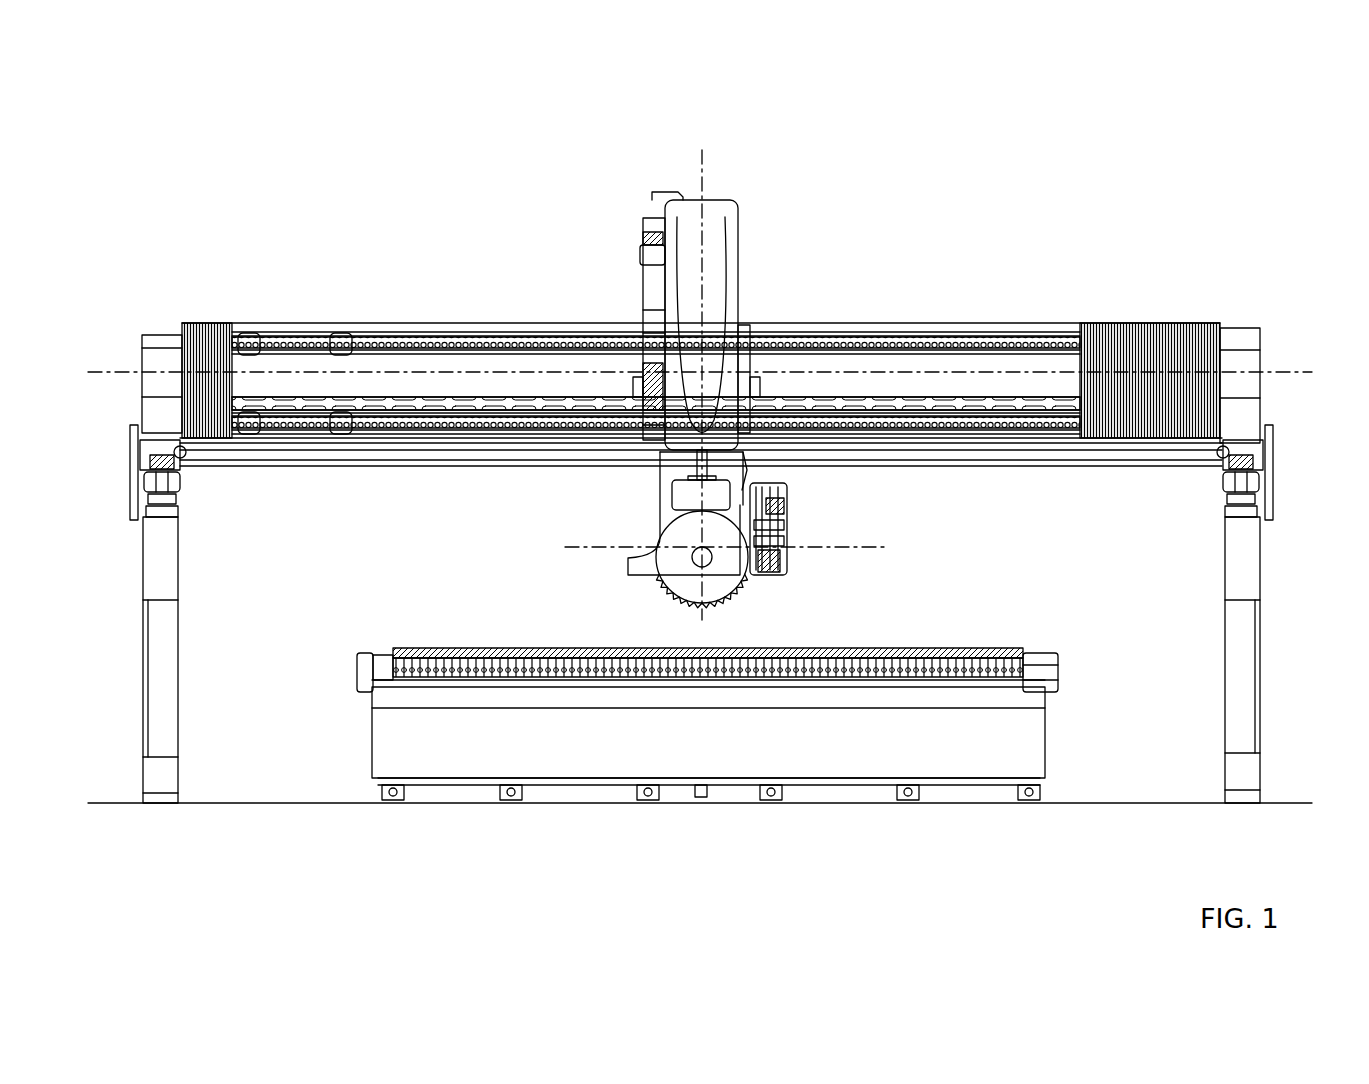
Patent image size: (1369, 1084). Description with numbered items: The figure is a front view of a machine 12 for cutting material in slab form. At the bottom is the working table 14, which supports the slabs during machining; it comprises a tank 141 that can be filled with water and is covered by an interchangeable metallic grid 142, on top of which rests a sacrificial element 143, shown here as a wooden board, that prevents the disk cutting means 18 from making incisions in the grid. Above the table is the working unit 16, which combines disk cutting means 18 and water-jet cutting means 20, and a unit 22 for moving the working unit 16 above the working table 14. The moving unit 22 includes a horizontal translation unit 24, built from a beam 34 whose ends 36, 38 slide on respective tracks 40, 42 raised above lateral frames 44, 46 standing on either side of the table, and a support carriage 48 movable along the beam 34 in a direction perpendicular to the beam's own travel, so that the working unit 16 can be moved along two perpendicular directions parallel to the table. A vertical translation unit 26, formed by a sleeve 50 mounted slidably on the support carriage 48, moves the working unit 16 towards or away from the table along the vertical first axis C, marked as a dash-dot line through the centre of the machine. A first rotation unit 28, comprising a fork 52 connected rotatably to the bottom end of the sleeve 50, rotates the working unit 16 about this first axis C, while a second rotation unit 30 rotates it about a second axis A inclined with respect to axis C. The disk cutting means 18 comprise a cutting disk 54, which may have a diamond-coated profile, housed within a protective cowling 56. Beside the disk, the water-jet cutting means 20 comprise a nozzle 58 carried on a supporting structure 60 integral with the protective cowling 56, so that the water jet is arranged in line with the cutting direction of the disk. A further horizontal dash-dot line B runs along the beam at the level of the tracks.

The machine for cutting slab material 12 is at (701, 267).
The working table 14 is at (677, 676).
The working unit 16 is at (702, 548).
The disk cutting means 18 is at (678, 578).
The water-jet cutting means 20 is at (857, 548).
The unit for moving the working unit 22 is at (625, 238).
The horizontal translation unit 24 is at (1270, 362).
The vertical translation unit 26 is at (767, 298).
The first rotation unit 28 is at (677, 460).
The second rotation unit 30 is at (645, 520).
The beam 34 is at (930, 323).
The end of beam 36 is at (1240, 323).
The end of beam 38 is at (158, 335).
The track 40 is at (1255, 487).
The track 42 is at (150, 480).
The lateral frame 44 is at (1262, 690).
The lateral frame 46 is at (143, 690).
The support carriage 48 is at (750, 326).
The sleeve 50 is at (725, 360).
The fork 52 is at (660, 495).
The cutting disk 54 is at (710, 600).
The protective cowling 56 is at (745, 580).
The nozzle 58 is at (760, 578).
The supporting structure 60 is at (745, 470).
The tank 141 is at (375, 758).
The interchangeable metallic grid 142 is at (1030, 663).
The sacrificial element 143 is at (985, 646).
The second axis A is at (587, 545).
The beam axis B is at (100, 375).
The first axis C is at (703, 165).